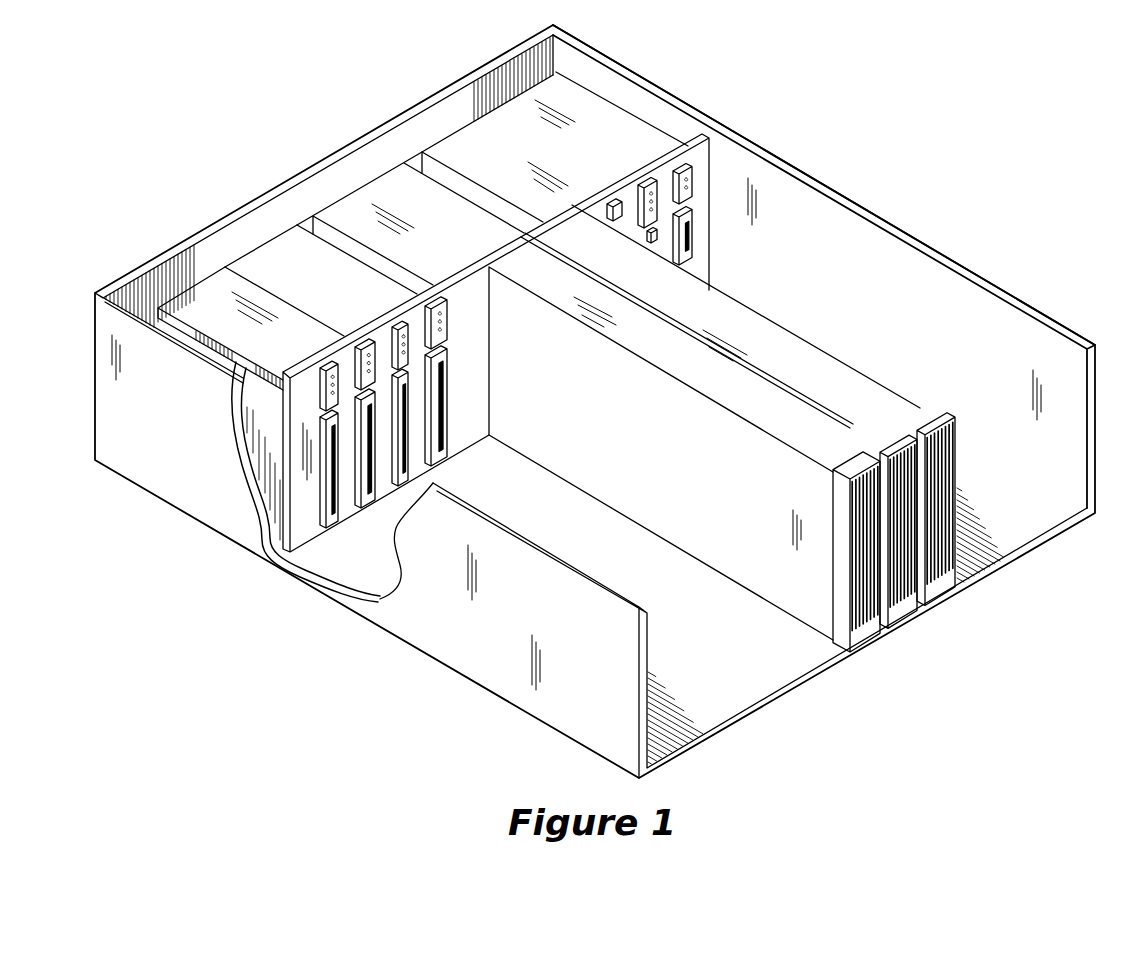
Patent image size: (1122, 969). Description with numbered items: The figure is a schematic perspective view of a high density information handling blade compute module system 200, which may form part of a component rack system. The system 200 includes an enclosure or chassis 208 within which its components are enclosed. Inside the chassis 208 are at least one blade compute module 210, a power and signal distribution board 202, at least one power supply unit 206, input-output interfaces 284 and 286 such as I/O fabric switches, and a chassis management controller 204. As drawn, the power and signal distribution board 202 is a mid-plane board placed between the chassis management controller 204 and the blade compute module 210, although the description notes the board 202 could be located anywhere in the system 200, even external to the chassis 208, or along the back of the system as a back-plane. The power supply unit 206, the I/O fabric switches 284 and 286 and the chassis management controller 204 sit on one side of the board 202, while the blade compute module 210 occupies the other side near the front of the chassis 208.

The information handling blade compute module system 200 is at (355, 656).
The power and signal distribution board 202 is at (675, 145).
The chassis management controller 204 is at (434, 249).
The power supply unit 206 is at (574, 166).
The chassis 208 is at (845, 196).
The blade compute module 210 is at (938, 583).
The input-output interface 284 is at (314, 302).
The input-output interface 286 is at (241, 348).